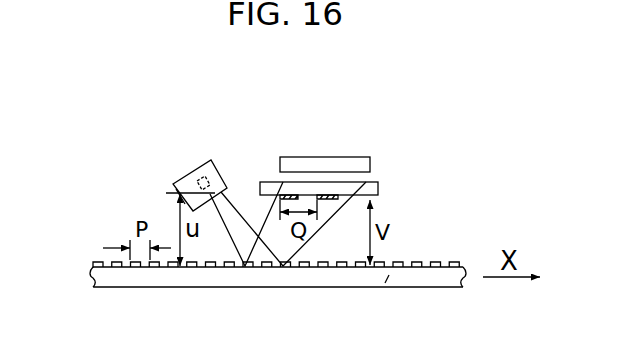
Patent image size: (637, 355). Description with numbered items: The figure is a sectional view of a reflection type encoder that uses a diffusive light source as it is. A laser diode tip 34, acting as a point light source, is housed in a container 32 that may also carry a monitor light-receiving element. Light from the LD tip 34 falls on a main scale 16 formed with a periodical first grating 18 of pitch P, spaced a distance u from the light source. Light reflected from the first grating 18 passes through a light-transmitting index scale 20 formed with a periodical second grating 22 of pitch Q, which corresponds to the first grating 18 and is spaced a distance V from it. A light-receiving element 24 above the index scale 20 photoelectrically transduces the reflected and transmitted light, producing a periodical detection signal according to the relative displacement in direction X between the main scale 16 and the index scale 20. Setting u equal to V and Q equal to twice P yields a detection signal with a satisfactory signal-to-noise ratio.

The main scale 16 is at (388, 288).
The first grating 18 is at (397, 260).
The index scale 20 is at (378, 183).
The second grating 22 is at (334, 199).
The light-receiving element 24 is at (318, 157).
The container 32 is at (173, 183).
The laser diode tip 34 is at (203, 178).